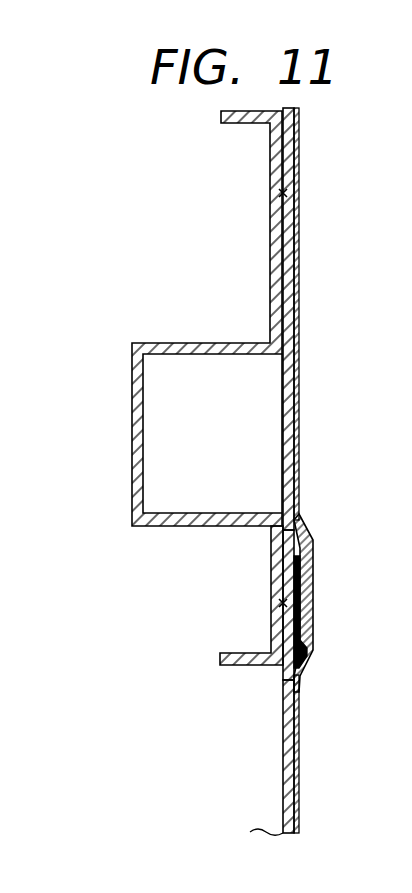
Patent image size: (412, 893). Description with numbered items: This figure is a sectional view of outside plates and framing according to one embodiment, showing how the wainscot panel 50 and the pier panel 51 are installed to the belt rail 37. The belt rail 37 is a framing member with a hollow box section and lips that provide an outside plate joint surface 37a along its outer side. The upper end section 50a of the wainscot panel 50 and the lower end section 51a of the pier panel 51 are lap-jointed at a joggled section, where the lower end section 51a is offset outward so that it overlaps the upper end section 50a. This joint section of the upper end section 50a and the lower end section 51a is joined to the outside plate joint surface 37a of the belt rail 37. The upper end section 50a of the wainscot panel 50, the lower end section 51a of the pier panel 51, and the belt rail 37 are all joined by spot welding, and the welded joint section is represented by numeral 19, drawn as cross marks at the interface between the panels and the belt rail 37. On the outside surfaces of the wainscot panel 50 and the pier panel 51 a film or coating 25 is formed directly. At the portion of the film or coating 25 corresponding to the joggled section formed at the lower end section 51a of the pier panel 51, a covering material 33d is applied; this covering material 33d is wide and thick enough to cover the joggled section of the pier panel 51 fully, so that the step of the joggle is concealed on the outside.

The belt rail 37 is at (132, 410).
The outside plate joint surface 37a is at (278, 633).
The joint section 19 is at (279, 193).
The pier panel 51 is at (298, 278).
The lower end section of the pier panel 51a is at (303, 629).
The wainscot panel 50 is at (290, 776).
The upper end section of the wainscot panel 50a is at (290, 576).
The covering material 33d is at (313, 573).
The film or coating 25 is at (300, 730).